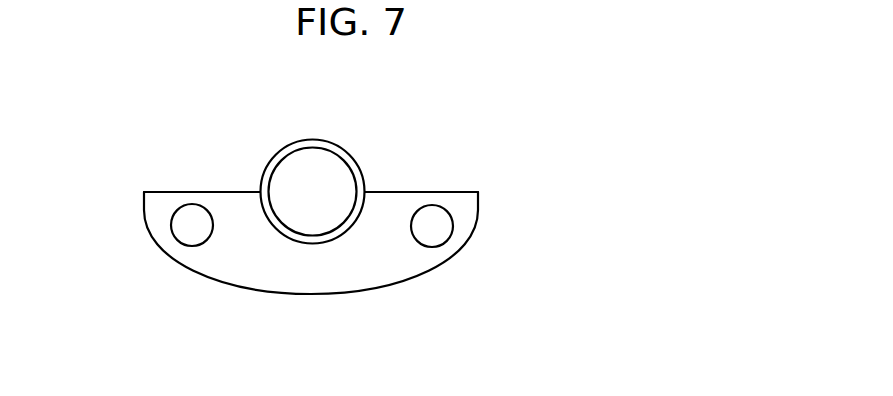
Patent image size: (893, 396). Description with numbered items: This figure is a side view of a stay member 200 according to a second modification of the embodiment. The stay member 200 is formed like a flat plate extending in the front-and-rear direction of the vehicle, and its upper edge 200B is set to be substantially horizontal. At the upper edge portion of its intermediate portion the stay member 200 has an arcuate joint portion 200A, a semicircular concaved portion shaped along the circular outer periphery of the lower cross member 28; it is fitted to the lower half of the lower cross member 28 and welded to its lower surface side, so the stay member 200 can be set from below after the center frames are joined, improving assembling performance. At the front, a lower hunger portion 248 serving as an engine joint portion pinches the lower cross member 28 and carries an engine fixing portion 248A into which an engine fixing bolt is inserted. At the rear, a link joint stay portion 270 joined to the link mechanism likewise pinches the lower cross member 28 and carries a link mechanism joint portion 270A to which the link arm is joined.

The lower cross member 28 is at (326, 140).
The stay member 200 is at (470, 207).
The arcuate joint portion 200A is at (312, 244).
The upper edge 200B is at (193, 192).
The lower hunger portion 248 is at (244, 262).
The engine fixing portion 248A is at (178, 240).
The link joint stay portion 270 is at (397, 264).
The link mechanism joint portion 270A is at (445, 244).